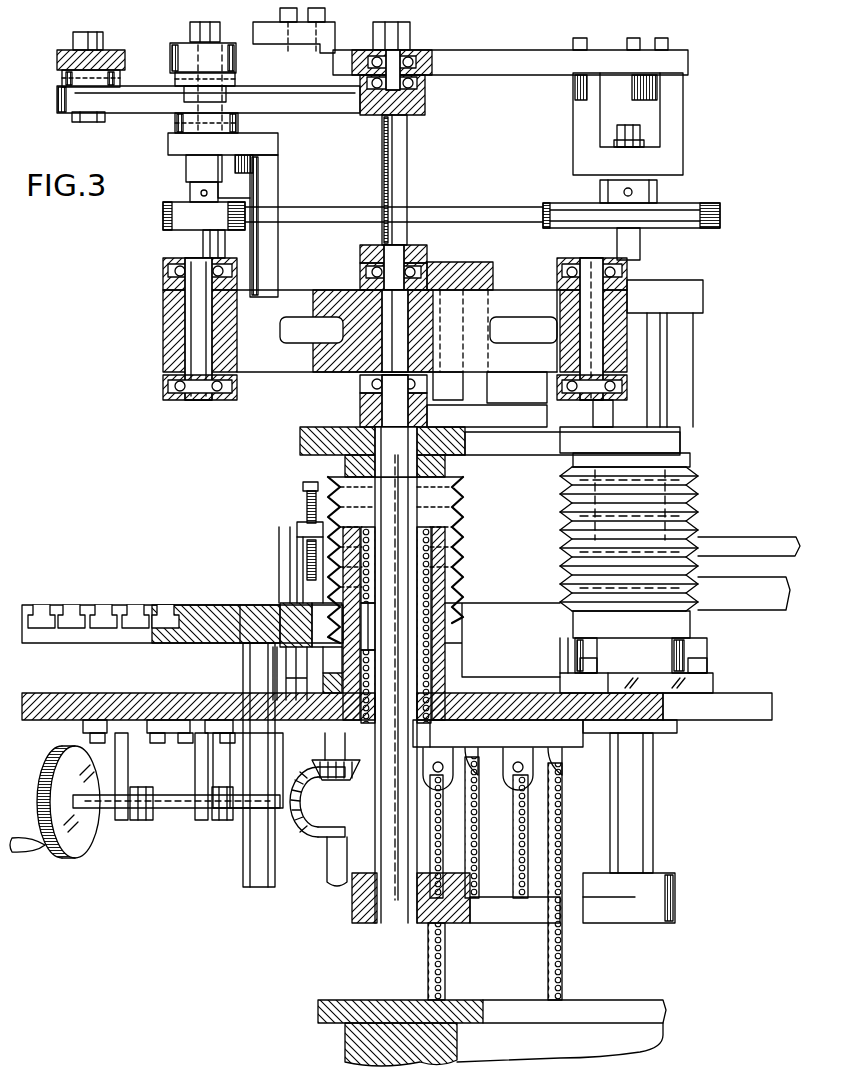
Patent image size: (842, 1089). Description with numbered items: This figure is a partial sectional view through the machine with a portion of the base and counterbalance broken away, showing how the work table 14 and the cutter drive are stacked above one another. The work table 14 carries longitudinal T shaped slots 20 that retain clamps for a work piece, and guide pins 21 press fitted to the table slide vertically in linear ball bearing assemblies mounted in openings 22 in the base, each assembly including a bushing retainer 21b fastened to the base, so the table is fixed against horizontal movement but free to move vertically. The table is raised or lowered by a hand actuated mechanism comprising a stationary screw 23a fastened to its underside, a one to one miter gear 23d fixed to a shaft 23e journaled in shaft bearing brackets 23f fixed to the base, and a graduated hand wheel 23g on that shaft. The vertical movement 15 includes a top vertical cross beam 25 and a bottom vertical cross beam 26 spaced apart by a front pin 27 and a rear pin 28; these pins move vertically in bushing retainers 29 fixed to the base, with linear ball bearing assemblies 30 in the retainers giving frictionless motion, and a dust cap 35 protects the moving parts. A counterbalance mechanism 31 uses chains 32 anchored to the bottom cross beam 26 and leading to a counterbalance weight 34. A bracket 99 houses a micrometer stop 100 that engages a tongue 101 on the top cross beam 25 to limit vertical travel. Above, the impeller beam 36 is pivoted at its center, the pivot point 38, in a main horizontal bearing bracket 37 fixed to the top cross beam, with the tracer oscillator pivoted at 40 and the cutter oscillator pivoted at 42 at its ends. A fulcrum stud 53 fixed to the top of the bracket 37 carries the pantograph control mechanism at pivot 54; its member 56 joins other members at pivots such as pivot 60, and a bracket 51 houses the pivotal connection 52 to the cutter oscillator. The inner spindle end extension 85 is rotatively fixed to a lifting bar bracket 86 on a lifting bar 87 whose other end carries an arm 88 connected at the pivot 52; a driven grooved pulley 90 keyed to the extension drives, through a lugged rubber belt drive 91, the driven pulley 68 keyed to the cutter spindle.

The pivot 60 is at (90, 35).
The pivotal connection 52 is at (205, 22).
The arm 88 is at (255, 45).
The pivot 54 is at (397, 62).
The lifting bar 87 is at (465, 52).
The member 56 is at (300, 106).
The fulcrum stud 53 is at (405, 155).
The inner spindle end extension 85 is at (617, 136).
The lifting bar bracket 86 is at (683, 125).
The bracket 51 is at (278, 190).
The driven pulley 68 is at (190, 200).
The lugged rubber belt drive 91 is at (440, 210).
The driven grooved pulley 90 is at (685, 203).
The main horizontal bearing bracket 37 is at (450, 265).
The impeller beam 36 is at (300, 290).
The pivot 42 is at (190, 306).
The pivot 40 is at (598, 315).
The pivot point 38 is at (390, 415).
The tongue 101 is at (298, 453).
The micrometer stop 100 is at (303, 488).
The top vertical cross beam 25 is at (500, 445).
The dust cap 35 is at (455, 545).
The vertical movement 15 is at (468, 554).
The front pin 27 is at (455, 572).
The linear ball bearing assemblies 30 is at (447, 588).
The bushing retainers 29 is at (297, 550).
The bracket 99 is at (297, 585).
The T shaped slots 20 is at (100, 605).
The openings 22 is at (248, 688).
The work table 14 is at (500, 635).
The bushing retainer 21b is at (240, 768).
The stationary screw 23a is at (336, 756).
The shaft bearing brackets 23f is at (128, 820).
The shaft 23e is at (178, 818).
The graduated hand wheel 23g is at (25, 850).
The guide pins 21 is at (250, 860).
The miter gear 23d is at (295, 838).
The rear pin 28 is at (645, 796).
The chains 32 is at (510, 840).
The bottom vertical cross beam 26 is at (590, 912).
The counterbalance mechanism 31 is at (425, 946).
The counterbalance weight 34 is at (345, 1040).